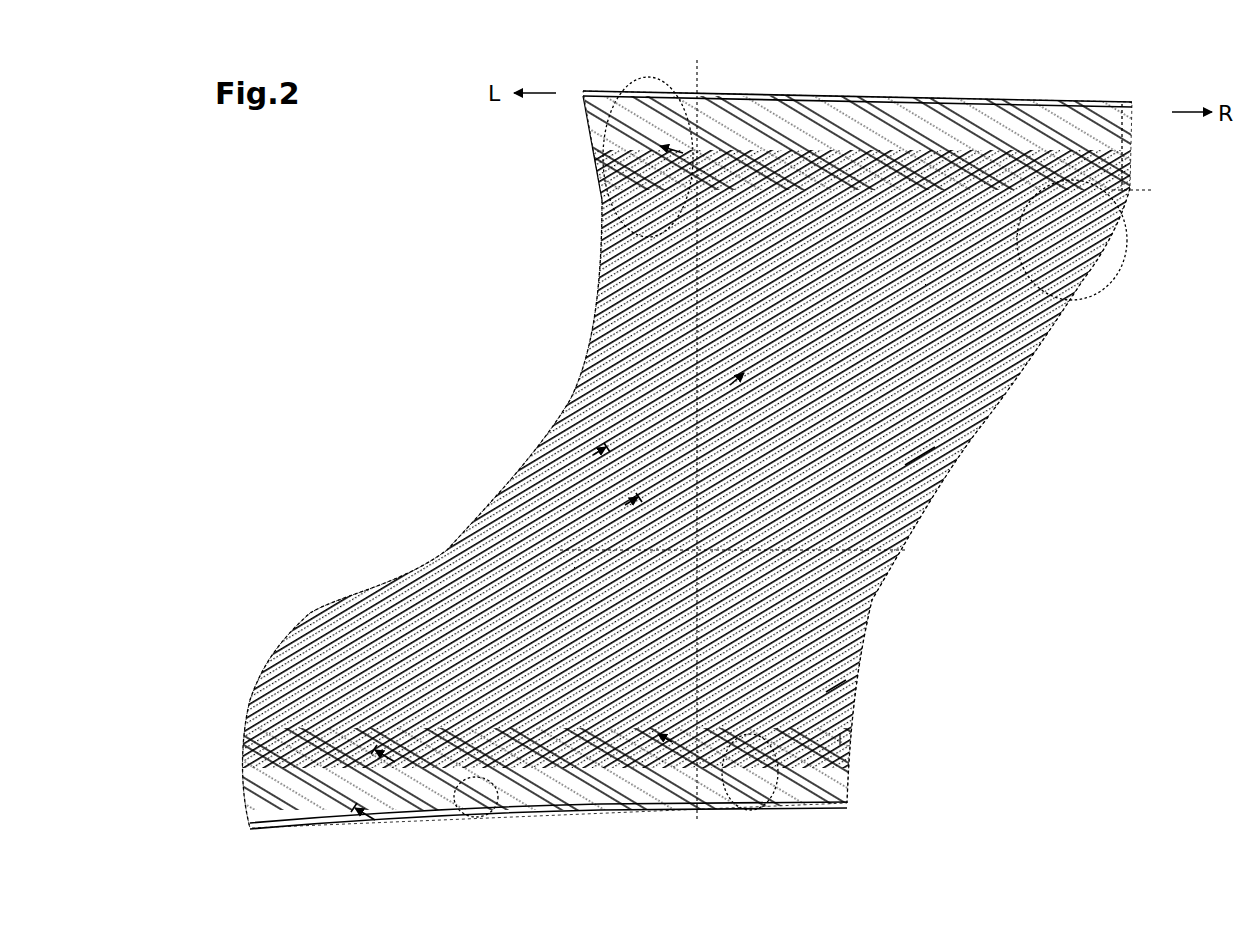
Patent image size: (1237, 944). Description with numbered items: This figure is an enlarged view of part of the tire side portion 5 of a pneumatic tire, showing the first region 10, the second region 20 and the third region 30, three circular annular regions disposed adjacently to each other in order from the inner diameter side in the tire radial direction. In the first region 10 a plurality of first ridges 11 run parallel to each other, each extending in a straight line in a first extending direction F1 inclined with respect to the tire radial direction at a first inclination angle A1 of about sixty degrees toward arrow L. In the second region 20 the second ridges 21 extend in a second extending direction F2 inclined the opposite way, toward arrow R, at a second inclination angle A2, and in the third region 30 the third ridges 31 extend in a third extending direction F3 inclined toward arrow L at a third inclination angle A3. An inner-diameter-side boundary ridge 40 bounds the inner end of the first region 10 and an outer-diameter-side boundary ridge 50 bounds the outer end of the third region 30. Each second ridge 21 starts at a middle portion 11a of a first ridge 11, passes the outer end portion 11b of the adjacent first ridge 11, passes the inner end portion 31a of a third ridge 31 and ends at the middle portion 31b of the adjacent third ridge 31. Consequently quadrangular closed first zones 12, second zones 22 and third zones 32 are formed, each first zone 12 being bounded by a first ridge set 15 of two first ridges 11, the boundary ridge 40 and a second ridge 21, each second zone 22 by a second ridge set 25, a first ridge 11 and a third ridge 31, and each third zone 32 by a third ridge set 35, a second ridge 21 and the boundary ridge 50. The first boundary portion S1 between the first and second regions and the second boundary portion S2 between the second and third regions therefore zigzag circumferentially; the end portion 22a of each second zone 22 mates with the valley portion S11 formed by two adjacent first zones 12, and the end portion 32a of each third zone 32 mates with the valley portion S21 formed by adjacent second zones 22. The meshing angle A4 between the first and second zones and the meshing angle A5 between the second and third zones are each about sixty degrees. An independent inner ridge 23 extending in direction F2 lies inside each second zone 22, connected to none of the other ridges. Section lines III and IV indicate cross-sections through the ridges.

The tire side portion 5 is at (520, 288).
The first region 10 is at (862, 745).
The first ridge 11 is at (900, 548).
The middle portion 11a is at (342, 770).
The outer end portion 11b is at (292, 725).
The first zone 12 is at (462, 788).
The first ridge set 15 is at (525, 845).
The second region 20 is at (864, 668).
The second ridge 21 is at (798, 150).
The second zone 22 is at (920, 448).
The end portion 22a is at (838, 686).
The inner ridge 23 is at (580, 490).
The second ridge set 25 is at (1072, 392).
The third region 30 is at (1137, 108).
The third ridge 31 is at (775, 150).
The inner end portion 31a is at (935, 140).
The middle portion 31b is at (1045, 165).
The third zone 32 is at (872, 100).
The end portion 32a is at (1010, 135).
The third ridge set 35 is at (830, 88).
The inner-diameter-side boundary ridge 40 is at (585, 810).
The outer-diameter-side boundary ridge 50 is at (700, 98).
The first boundary portion S1 is at (840, 740).
The second boundary portion S2 is at (1120, 200).
The valley portion S11 is at (727, 742).
The valley portion S21 is at (1080, 292).
The first inclination angle A1 is at (622, 704).
The second inclination angle A2 is at (772, 334).
The third inclination angle A3 is at (694, 76).
The meshing angle A4 is at (764, 772).
The meshing angle A5 is at (591, 168).
The first extending direction F1 is at (666, 740).
The second extending direction F2 is at (736, 388).
The third extending direction F3 is at (682, 150).
The section line III is at (385, 795).
The section line IV is at (606, 483).